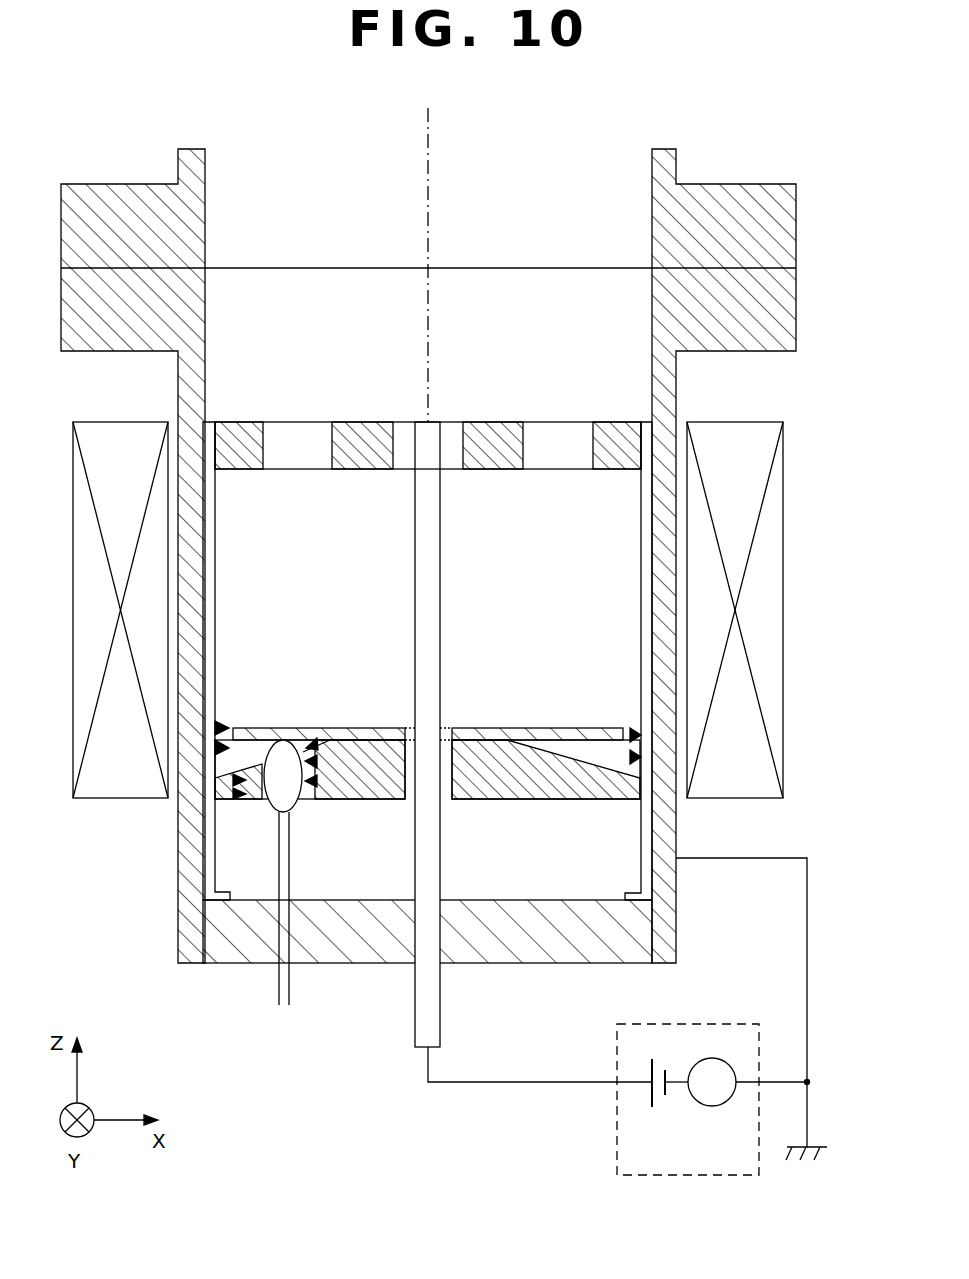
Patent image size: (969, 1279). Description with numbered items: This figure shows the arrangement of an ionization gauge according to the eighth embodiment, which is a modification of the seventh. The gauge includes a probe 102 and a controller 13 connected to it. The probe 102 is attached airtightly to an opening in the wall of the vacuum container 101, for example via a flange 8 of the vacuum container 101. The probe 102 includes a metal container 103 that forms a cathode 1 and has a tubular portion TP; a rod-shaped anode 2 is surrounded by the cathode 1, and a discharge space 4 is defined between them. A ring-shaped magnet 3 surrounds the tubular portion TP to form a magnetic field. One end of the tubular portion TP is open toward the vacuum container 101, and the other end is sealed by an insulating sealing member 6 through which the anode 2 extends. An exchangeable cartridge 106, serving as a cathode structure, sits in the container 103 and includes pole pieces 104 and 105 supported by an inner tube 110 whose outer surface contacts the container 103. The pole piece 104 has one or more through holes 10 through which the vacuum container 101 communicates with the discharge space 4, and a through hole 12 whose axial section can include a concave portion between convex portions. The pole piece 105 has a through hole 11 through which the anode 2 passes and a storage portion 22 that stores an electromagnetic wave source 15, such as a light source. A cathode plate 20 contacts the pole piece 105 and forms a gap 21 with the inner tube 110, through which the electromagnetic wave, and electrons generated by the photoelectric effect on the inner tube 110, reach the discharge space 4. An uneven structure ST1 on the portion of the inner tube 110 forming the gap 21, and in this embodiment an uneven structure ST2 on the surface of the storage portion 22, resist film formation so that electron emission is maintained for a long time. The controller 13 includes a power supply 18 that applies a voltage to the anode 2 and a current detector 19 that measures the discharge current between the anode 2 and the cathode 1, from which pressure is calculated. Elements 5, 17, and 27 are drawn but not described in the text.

The cathode 1 is at (678, 828).
The anode 2 is at (415, 864).
The magnet 3 is at (783, 610).
The discharge space 4 is at (521, 618).
The lower space 5 is at (330, 891).
The sealing member 6 is at (230, 964).
The flange 8 is at (97, 175).
The through hole 10 is at (565, 428).
The through hole 11 is at (445, 803).
The through hole 12 is at (452, 415).
The controller 13 is at (627, 1016).
The electromagnetic wave source 15 is at (300, 812).
The magnetic pole plate 17 is at (808, 312).
The power supply 18 is at (658, 1110).
The current detector 19 is at (710, 1106).
The cathode plate 20 is at (545, 728).
The gap 21 is at (233, 720).
The storage portion 22 is at (312, 742).
The lead wires 27 is at (295, 995).
The vacuum container 101 is at (722, 170).
The probe 102 is at (125, 890).
The container 103 is at (760, 388).
The pole piece 104 is at (492, 470).
The pole piece 105 is at (368, 800).
The cartridge 106 is at (370, 395).
The inner tube 110 is at (641, 560).
The tubular portion TP is at (676, 386).
The uneven structure ST1 is at (238, 730).
The uneven structure ST2 is at (252, 805).